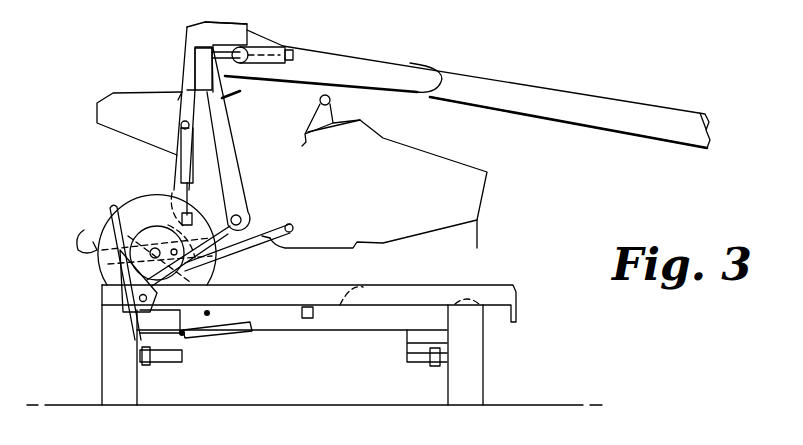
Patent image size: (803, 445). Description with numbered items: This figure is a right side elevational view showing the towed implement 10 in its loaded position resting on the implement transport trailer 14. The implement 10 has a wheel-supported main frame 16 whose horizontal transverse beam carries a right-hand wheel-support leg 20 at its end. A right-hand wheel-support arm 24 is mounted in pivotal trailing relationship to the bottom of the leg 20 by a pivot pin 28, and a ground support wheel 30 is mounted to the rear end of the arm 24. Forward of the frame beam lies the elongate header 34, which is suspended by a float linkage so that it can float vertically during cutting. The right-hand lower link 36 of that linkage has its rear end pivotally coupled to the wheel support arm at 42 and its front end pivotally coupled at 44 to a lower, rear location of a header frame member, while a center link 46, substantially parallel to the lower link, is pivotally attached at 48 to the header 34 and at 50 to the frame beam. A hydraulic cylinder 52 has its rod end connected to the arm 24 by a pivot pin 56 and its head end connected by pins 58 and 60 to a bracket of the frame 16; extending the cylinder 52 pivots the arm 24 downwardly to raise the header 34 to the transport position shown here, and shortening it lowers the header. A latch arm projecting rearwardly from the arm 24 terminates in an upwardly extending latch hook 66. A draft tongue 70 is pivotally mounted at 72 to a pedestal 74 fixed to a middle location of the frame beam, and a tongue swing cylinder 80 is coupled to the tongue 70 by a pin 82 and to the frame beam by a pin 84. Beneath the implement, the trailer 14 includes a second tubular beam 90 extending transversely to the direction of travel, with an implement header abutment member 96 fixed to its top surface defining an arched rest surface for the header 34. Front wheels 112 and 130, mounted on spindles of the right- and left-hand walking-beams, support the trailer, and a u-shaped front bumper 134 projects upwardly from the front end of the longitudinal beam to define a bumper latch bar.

The towed implement 10 is at (545, 72).
The implement transport trailer 14 is at (523, 331).
The main frame 16 is at (178, 74).
The right-hand wheel-support leg 20 is at (248, 146).
The right-hand wheel-support arm 24 is at (230, 257).
The pivot pin 28 is at (241, 217).
The ground support wheel 30 is at (100, 300).
The header 34 is at (479, 197).
The right-hand lower link 36 is at (270, 250).
The pivotal coupling of lower link rear end 42 is at (103, 300).
The pivotal coupling of lower link front end 44 is at (294, 227).
The center link 46 is at (303, 140).
The pivotal attachment of center link forward end 48 is at (331, 98).
The pivotal attachment of center link rear end 50 is at (186, 115).
The hydraulic cylinder 52 is at (180, 158).
The pivot pin 56 is at (174, 197).
The pin 58 is at (165, 129).
The pin 60 is at (110, 270).
The latch hook 66 is at (78, 235).
The draft tongue 70 is at (675, 148).
The pivotal mounting of tongue 72 is at (245, 24).
The pedestal 74 is at (187, 33).
The tongue swing cylinder 80 is at (262, 52).
The pin 82 is at (260, 46).
The pin 84 is at (192, 53).
The second tubular beam 90 is at (333, 330).
The implement header abutment member 96 is at (366, 286).
The front wheel 112 is at (138, 380).
The front wheel 130 is at (485, 368).
The front bumper 134 is at (100, 275).